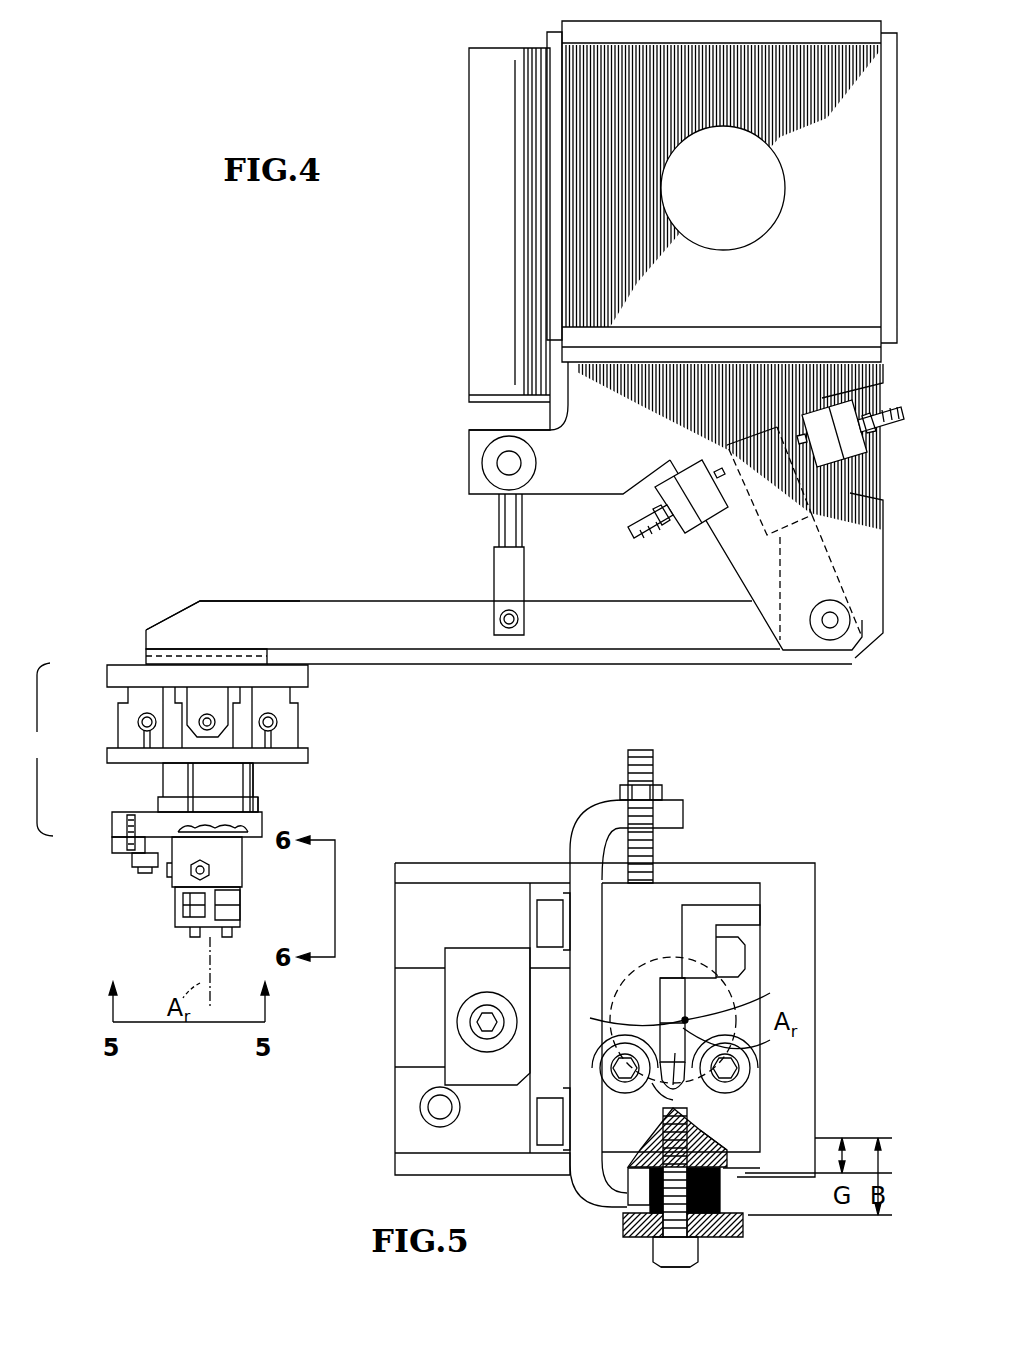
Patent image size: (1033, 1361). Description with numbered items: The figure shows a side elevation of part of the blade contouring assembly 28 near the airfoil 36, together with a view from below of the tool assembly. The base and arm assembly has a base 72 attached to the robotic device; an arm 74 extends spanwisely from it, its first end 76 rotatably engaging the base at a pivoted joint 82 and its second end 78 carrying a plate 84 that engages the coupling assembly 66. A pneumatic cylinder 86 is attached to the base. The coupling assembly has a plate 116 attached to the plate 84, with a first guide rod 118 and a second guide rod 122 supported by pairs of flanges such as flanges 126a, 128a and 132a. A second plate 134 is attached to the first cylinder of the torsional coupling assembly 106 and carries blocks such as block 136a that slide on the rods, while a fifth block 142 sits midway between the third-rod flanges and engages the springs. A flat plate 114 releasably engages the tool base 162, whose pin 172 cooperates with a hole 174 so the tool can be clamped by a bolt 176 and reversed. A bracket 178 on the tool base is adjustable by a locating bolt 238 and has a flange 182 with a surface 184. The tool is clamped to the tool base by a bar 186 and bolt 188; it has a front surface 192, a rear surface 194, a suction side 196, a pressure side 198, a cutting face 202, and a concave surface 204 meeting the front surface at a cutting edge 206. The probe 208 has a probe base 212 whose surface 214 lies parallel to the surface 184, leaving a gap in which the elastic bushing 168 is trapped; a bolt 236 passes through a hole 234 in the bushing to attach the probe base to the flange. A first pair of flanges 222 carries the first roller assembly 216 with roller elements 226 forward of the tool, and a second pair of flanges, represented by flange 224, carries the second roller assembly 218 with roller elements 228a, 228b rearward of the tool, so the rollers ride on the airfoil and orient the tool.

In FIG. 4, the rotary blade assembly 28 is at (258, 449).
In FIG. 4, the rotary blade block 36 is at (784, 278).
In FIG. 4, the pneumatic cylinder 86 is at (476, 213).
In FIG. 4, the base 72 is at (569, 480).
In FIG. 4, the arm 74 is at (559, 640).
In FIG. 4, the first end 76 is at (833, 665).
In FIG. 4, the second end 78 is at (172, 613).
In FIG. 4, the pivoted joint 82 is at (836, 625).
In FIG. 4, the plate 84 is at (226, 651).
In FIG. 4, the flange 126a is at (147, 690).
In FIG. 4, the flange 132a is at (208, 688).
In FIG. 4, the flange 128a is at (281, 688).
In FIG. 4, the plate 116 is at (110, 676).
In FIG. 4, the first guide rod 118 is at (145, 722).
In FIG. 4, the second guide rod 122 is at (270, 722).
In FIG. 4, the coupling assembly 66 is at (37, 749).
In FIG. 4, the block 136a is at (110, 752).
In FIG. 4, the fifth block 142 is at (204, 742).
In FIG. 4, the torsional coupling assembly 106 is at (275, 766).
In FIG. 5, the torsional coupling assembly 106 is at (745, 985).
In FIG. 4, the second plate 134 is at (305, 752).
In FIG. 4, the hole 174 is at (129, 813).
In FIG. 4, the flat plate 114 is at (115, 826).
In FIG. 4, the pin 172 is at (127, 841).
In FIG. 4, the bolt 176 is at (132, 862).
In FIG. 5, the bolt 176 is at (470, 1037).
In FIG. 4, the bracket 178 is at (210, 868).
In FIG. 5, the bracket 178 is at (608, 812).
In FIG. 4, the roller element 228a is at (180, 897).
In FIG. 4, the roller element 228b is at (182, 915).
In FIG. 4, the roller elements 226 is at (237, 905).
In FIG. 5, the locating bolt 238 is at (645, 750).
In FIG. 5, the tool base 162 is at (780, 864).
In FIG. 5, the bar 186 is at (698, 935).
In FIG. 5, the suction side 196 is at (668, 976).
In FIG. 5, the bolt 188 is at (728, 952).
In FIG. 5, the concave surface 204 is at (659, 1022).
In FIG. 5, the cutting edge 206 is at (748, 1000).
In FIG. 5, the rear surface 194 is at (590, 1018).
In FIG. 5, the front surface 192 is at (747, 1045).
In FIG. 5, the second roller assembly 218 is at (606, 1068).
In FIG. 5, the flange 224 is at (600, 1080).
In FIG. 5, the pressure side 198 is at (655, 1086).
In FIG. 5, the cutting face 202 is at (686, 1062).
In FIG. 5, the first roller assembly 216 is at (738, 1074).
In FIG. 5, the probe base 212 is at (709, 1142).
In FIG. 5, the first pair of flanges 222 is at (732, 1142).
In FIG. 5, the surface 214 is at (748, 1168).
In FIG. 5, the probe 208 is at (620, 1135).
In FIG. 5, the surface 184 is at (724, 1208).
In FIG. 5, the elastic bushing 168 is at (624, 1193).
In FIG. 5, the flange 182 is at (722, 1233).
In FIG. 5, the hole 234 is at (661, 1262).
In FIG. 5, the bolt 236 is at (673, 1268).